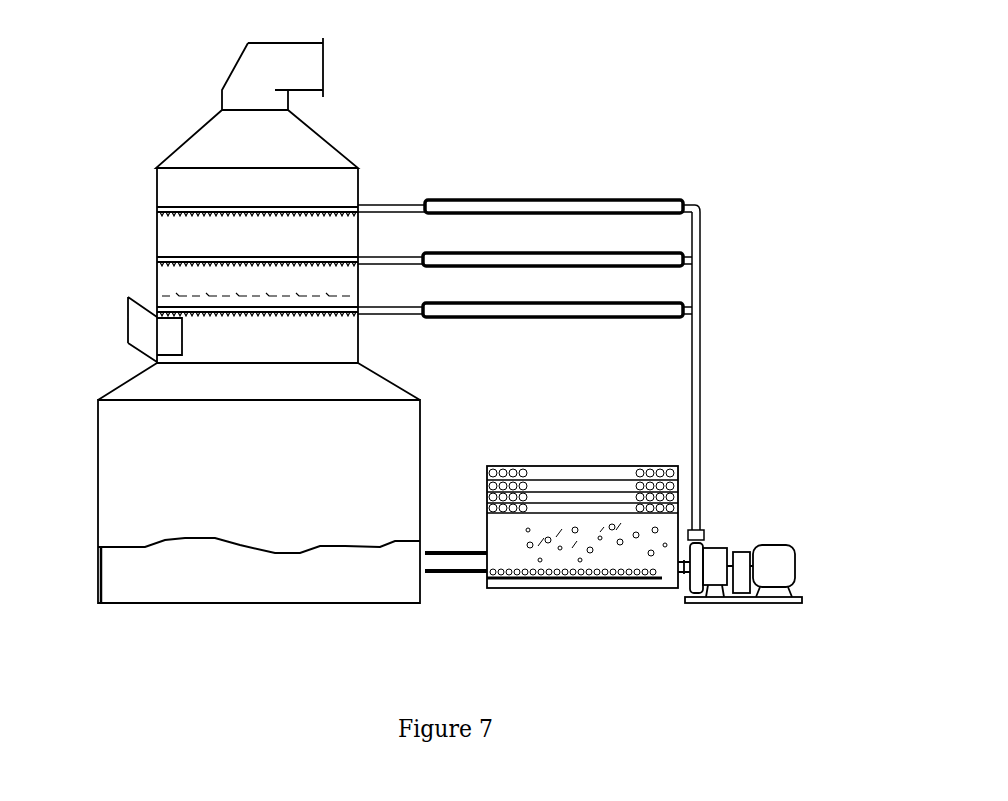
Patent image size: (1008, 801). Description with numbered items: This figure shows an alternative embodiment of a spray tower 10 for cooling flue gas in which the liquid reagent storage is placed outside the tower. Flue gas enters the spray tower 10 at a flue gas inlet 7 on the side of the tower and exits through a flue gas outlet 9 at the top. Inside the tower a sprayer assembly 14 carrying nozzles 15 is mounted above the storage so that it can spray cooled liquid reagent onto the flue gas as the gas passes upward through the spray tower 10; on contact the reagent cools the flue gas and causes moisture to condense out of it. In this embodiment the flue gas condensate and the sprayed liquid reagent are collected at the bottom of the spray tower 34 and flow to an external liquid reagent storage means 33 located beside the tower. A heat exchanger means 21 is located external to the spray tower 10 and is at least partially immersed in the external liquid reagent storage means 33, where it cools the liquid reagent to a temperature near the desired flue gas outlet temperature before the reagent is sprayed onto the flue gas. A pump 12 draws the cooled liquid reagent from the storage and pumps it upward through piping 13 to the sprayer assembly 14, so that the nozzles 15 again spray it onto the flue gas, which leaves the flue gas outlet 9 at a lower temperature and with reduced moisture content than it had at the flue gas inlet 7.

The spray tower 10 is at (163, 112).
The flue gas outlet 9 is at (338, 62).
The nozzles 15 is at (180, 210).
The flue gas inlet 7 is at (113, 325).
The sprayer assembly 14 is at (602, 180).
The piping 13 is at (715, 427).
The pump 12 is at (815, 563).
The external liquid reagent storage means 33 is at (518, 588).
The heat exchanger means 21 is at (548, 470).
The bottom of the spray tower 34 is at (250, 590).